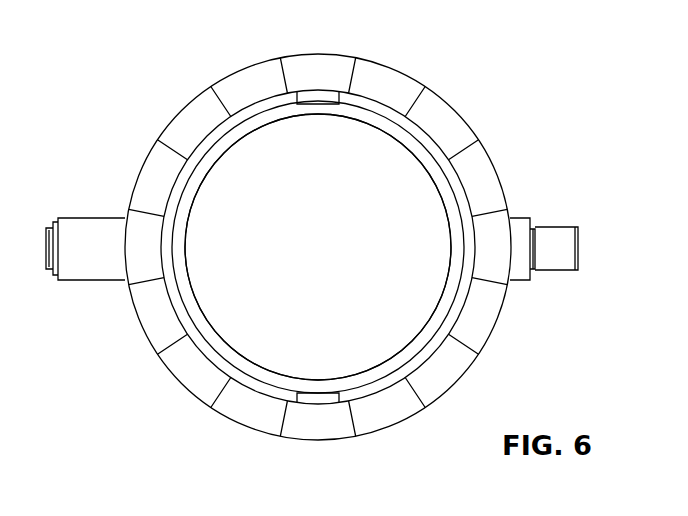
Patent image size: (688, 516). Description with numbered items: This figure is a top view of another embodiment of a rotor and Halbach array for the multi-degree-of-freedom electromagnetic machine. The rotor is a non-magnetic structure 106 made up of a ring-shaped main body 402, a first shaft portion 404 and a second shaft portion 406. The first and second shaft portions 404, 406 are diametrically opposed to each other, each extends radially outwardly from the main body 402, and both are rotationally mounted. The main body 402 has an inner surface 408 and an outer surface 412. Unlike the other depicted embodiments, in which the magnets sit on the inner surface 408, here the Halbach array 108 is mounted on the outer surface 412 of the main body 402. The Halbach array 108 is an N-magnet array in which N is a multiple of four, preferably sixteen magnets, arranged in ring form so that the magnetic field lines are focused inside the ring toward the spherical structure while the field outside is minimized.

The non-magnetic structure 106 is at (440, 242).
The Halbach array 108 is at (154, 134).
The main body 402 is at (182, 237).
The first shaft portion 404 is at (88, 228).
The second shaft portion 406 is at (555, 235).
The inner surface 408 is at (253, 137).
The outer surface 412 is at (380, 103).